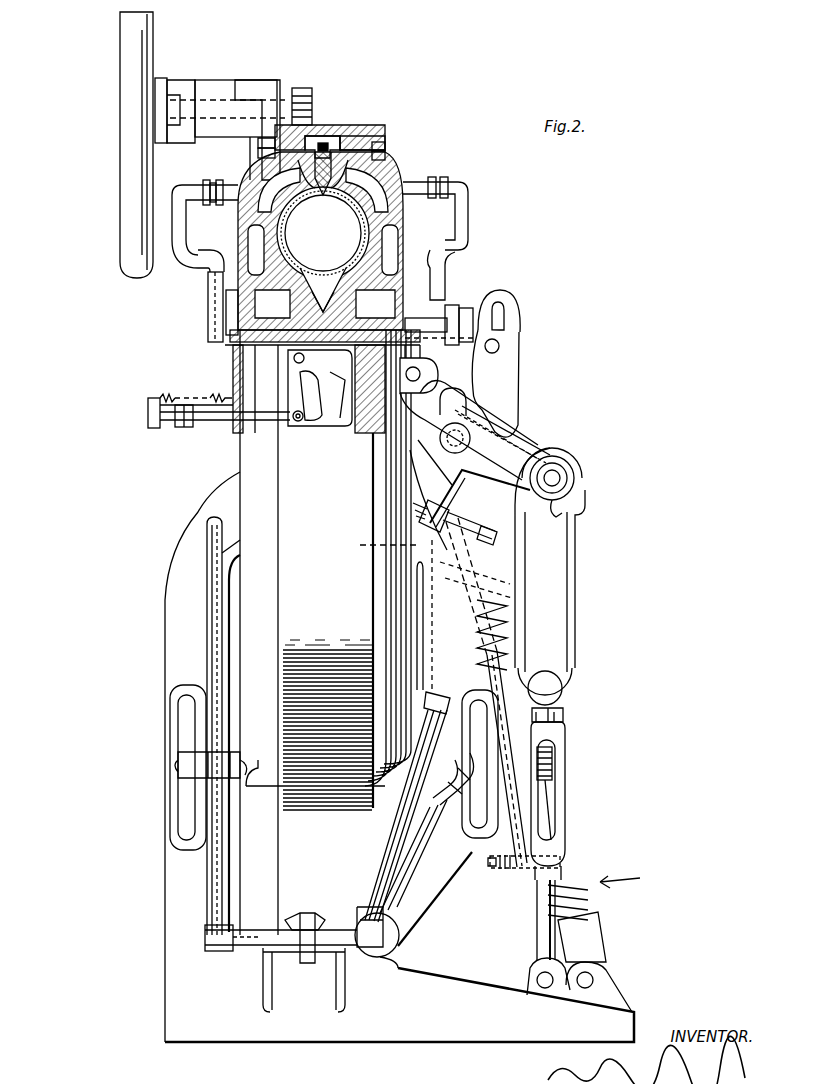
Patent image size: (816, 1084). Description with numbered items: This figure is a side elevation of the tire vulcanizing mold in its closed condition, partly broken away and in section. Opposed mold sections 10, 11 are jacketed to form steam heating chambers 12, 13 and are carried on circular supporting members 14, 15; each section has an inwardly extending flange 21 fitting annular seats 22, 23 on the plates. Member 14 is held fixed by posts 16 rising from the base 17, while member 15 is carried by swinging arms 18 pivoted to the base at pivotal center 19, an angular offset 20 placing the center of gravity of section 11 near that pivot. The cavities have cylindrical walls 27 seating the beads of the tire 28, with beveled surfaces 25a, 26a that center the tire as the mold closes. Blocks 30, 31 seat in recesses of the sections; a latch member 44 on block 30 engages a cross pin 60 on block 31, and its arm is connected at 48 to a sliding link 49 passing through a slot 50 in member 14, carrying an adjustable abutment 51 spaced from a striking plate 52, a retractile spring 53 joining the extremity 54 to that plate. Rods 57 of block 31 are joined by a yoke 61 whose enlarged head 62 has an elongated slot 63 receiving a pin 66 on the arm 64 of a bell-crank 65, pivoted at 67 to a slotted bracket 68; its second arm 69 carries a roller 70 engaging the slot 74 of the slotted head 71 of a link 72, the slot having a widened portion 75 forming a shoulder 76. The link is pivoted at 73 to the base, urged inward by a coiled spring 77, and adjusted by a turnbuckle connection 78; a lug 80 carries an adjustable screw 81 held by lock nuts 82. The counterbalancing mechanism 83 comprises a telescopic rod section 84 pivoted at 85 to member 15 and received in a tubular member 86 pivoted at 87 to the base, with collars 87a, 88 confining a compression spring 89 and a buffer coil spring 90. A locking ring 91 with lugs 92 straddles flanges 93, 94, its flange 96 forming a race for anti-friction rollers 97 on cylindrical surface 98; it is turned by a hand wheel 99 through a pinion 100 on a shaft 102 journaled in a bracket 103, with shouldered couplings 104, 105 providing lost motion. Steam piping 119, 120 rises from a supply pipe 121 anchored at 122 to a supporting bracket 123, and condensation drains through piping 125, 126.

The hand wheel 99 is at (130, 115).
The shouldered coupling 105 is at (160, 72).
The shouldered coupling 104 is at (185, 80).
The shaft 102 is at (212, 98).
The bracket 103 is at (240, 85).
The pinion 100 is at (300, 88).
The anti-friction rollers 97 is at (328, 128).
The flange 96 is at (333, 137).
The locking ring 91 is at (358, 140).
The peripheral flanged portion 94 is at (378, 146).
The lugs 92 is at (266, 154).
The peripheral flanged portion 93 is at (262, 144).
The mold section 11 is at (400, 236).
The steam heating chamber 13 is at (410, 182).
The tire 28 is at (323, 249).
The cylindrical surface 98 is at (312, 186).
The cylindrical walls 27 is at (312, 292).
The beveled surface 25a is at (271, 304).
The beveled surface 26a is at (399, 304).
The steam heating chamber 12 is at (250, 205).
The piping 119 is at (208, 645).
The mold section 10 is at (235, 288).
The piping 120 is at (390, 826).
The block 30 is at (238, 335).
The flange 21 is at (235, 342).
The annular seat 22 is at (236, 365).
The supporting member 14 is at (275, 440).
The supporting member 15 is at (353, 433).
The slot 50 is at (278, 400).
The block 31 is at (318, 376).
The latch member 44 is at (308, 394).
The connection 48 is at (305, 417).
The cross pin 60 is at (340, 428).
The extremity 54 is at (152, 418).
The sliding link 49 is at (215, 422).
The adjustable abutment 51 is at (185, 430).
The retractile spring 53 is at (165, 393).
The striking plate 52 is at (230, 380).
The rods or dowels 57 is at (440, 322).
The yoke 61 is at (452, 315).
The enlarged head 62 is at (508, 300).
The elongated slot 63 is at (504, 321).
The arm 64 is at (505, 375).
The pin or bolt 66 is at (498, 350).
The slotted bracket 68 is at (478, 396).
The bell-crank 65 is at (508, 428).
The pivot 67 is at (512, 440).
The annular seat 23 is at (412, 352).
The pivot 85 is at (422, 376).
The arm 69 is at (548, 452).
The roller 70 is at (566, 484).
The widened portion 75 is at (572, 503).
The shoulder 76 is at (575, 524).
The slotted head 71 is at (572, 548).
The slot 74 is at (545, 570).
The lug 80 is at (462, 478).
The lock nuts 82 is at (452, 512).
The adjustable screw 81 is at (480, 528).
The collar 87a is at (372, 545).
The swinging arms 18 is at (497, 622).
The telescopic rod section 84 is at (505, 588).
The coil spring 90 is at (505, 650).
The tubular member 86 is at (560, 705).
The turnbuckle connection 78 is at (562, 748).
The link 72 is at (536, 925).
The coiled spring 77 is at (497, 868).
The compression spring 89 is at (585, 897).
The collar 88 is at (592, 928).
The counterbalancing mechanism 83 is at (634, 877).
The pivot 73 is at (540, 990).
The pivot 87 is at (598, 978).
The base 17 is at (378, 1030).
The posts 16 is at (170, 622).
The piping 125 is at (215, 868).
The supply pipe 121 is at (253, 948).
The anchorage 122 is at (302, 918).
The supporting bracket 123 is at (272, 990).
The pivotal center 19 is at (400, 946).
The piping 126 is at (418, 873).
The angular offset 20 is at (428, 898).